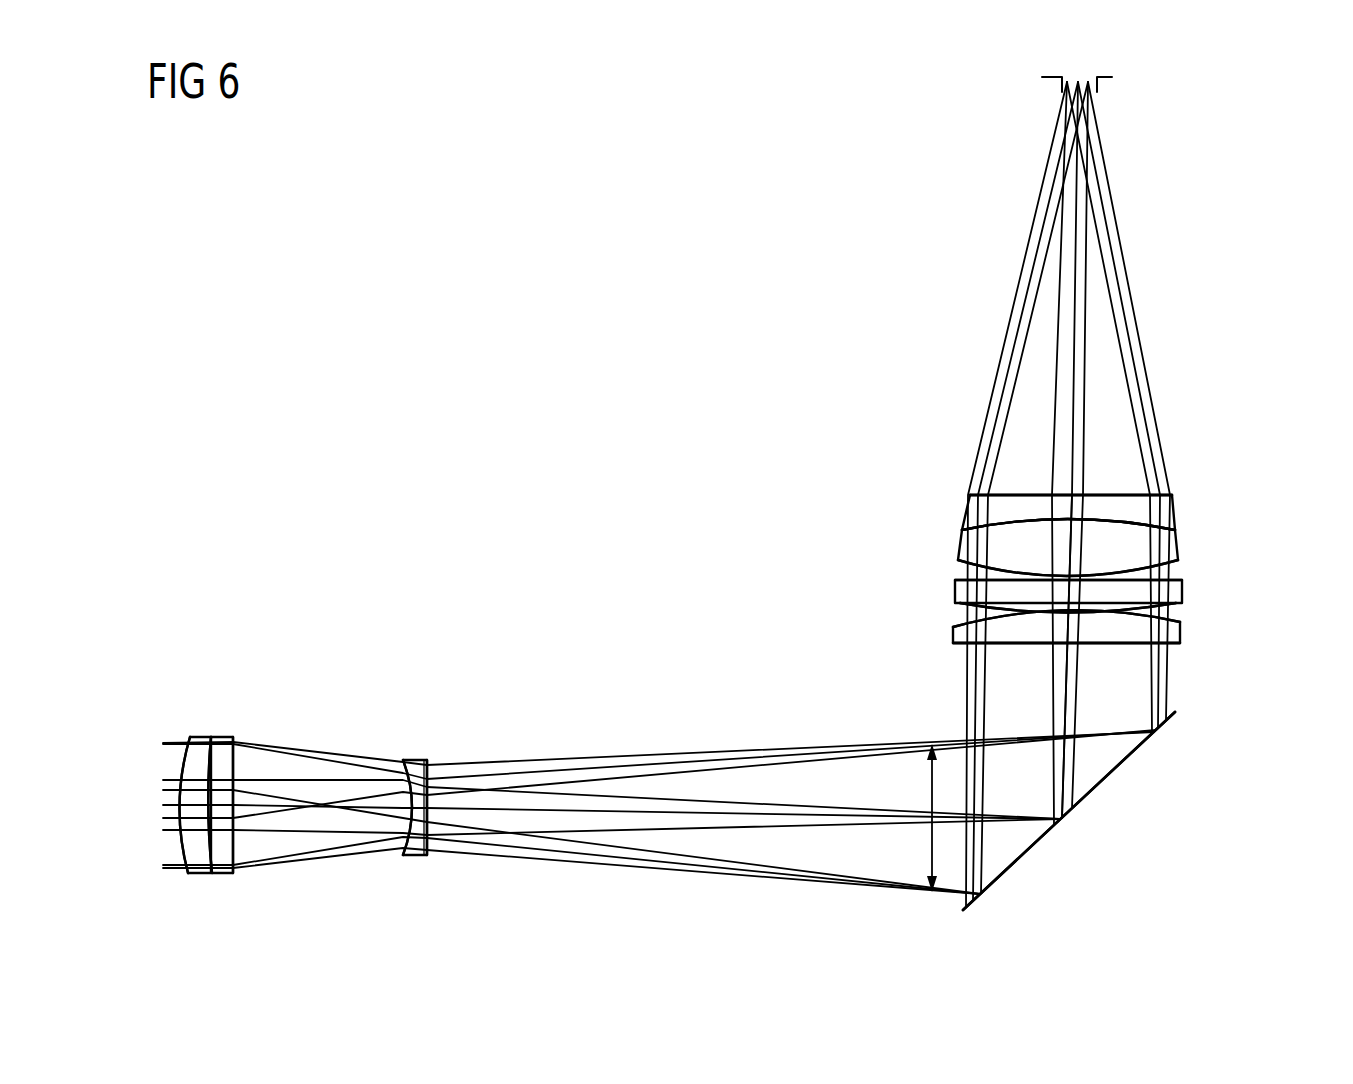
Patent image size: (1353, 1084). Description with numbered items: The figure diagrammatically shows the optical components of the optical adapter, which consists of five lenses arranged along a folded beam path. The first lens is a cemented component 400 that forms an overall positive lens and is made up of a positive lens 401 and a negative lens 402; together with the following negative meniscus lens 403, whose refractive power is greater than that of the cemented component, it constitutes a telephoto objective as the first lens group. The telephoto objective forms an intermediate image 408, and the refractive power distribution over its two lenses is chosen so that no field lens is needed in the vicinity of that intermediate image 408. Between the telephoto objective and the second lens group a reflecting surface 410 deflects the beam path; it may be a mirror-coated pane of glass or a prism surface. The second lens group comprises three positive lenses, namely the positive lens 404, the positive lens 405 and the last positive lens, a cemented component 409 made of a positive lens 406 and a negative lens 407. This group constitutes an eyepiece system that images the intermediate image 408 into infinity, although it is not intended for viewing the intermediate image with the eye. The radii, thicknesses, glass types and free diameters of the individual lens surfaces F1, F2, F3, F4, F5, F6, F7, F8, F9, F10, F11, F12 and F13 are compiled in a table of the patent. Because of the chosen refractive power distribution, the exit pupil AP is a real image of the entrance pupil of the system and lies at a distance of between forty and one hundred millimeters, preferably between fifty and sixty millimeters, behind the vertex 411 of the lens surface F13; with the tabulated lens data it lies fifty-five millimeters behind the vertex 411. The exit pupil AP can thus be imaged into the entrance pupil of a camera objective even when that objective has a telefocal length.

The cemented component 400 is at (199, 685).
The positive lens 401 is at (193, 760).
The negative lens 402 is at (222, 760).
The negative meniscus lens 403 is at (413, 842).
The positive lens 404 is at (1021, 636).
The positive lens 405 is at (972, 598).
The positive lens 406 is at (997, 545).
The negative lens 407 is at (1123, 503).
The intermediate image 408 is at (925, 832).
The cemented component 409 is at (918, 500).
The reflecting surface 410 is at (1037, 847).
The vertex 411 is at (1071, 476).
The exit pupil AP is at (1131, 97).
The lens surface F1 is at (168, 843).
The lens surface F2 is at (212, 843).
The lens surface F3 is at (246, 843).
The lens surface F4 is at (398, 792).
The lens surface F5 is at (434, 793).
The lens surface F6 is at (1106, 777).
The lens surface F7 is at (1137, 648).
The lens surface F8 is at (1146, 611).
The lens surface F9 is at (972, 626).
The lens surface F10 is at (985, 597).
The lens surface F11 is at (1150, 573).
The lens surface F12 is at (1126, 527).
The lens surface F13 is at (1010, 490).